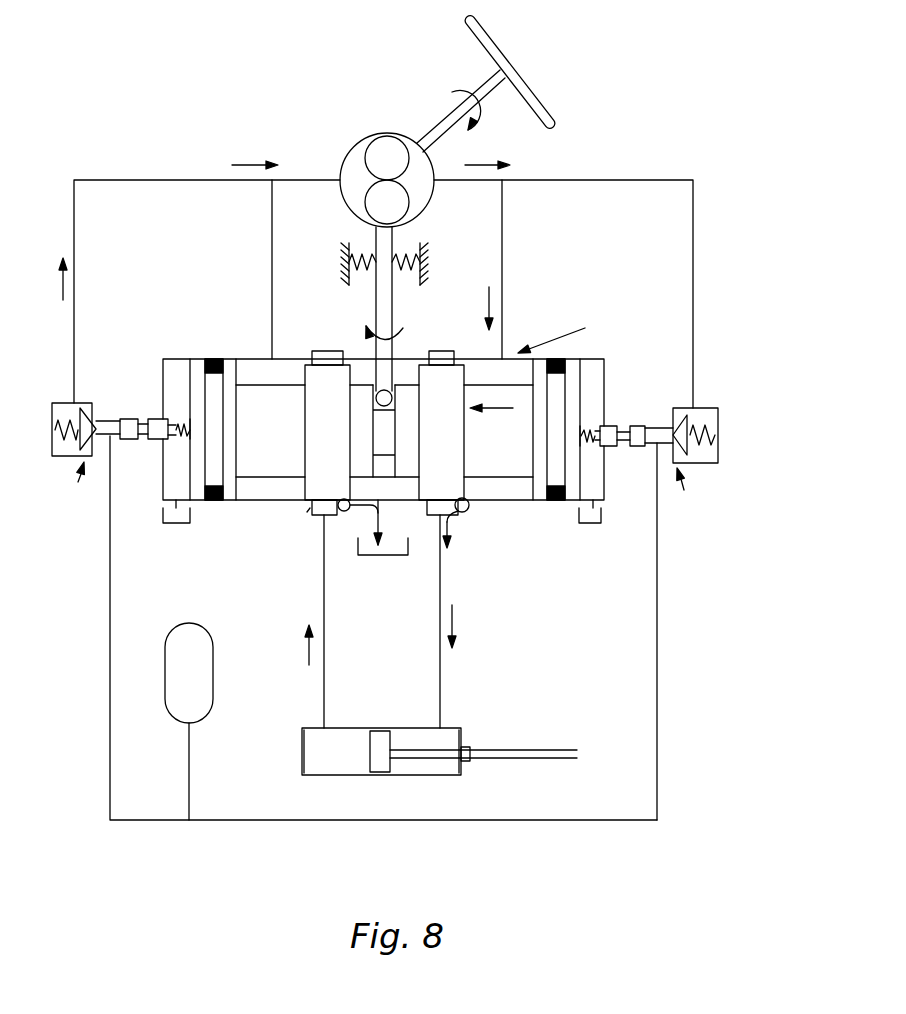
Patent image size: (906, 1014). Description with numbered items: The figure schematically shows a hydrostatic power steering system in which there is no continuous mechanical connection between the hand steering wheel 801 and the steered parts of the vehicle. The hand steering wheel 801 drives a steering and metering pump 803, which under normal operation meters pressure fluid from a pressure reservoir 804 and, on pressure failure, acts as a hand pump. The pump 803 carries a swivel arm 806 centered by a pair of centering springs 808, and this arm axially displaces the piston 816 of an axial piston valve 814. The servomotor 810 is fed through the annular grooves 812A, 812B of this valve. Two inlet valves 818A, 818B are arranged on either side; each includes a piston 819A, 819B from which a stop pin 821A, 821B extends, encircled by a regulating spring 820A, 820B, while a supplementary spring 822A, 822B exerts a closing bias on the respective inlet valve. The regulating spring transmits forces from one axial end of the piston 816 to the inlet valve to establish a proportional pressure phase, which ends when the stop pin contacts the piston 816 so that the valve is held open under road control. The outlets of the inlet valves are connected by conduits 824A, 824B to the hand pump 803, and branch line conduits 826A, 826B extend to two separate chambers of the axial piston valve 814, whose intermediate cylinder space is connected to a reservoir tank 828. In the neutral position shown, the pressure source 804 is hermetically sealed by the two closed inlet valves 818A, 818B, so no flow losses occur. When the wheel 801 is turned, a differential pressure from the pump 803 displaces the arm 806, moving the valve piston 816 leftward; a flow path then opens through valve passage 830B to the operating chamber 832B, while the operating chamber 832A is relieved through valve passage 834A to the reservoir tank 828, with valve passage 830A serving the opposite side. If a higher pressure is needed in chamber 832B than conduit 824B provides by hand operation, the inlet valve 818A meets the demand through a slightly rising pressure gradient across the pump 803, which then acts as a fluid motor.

The hand steering wheel 801 is at (540, 108).
The steering and metering pump 803 is at (362, 165).
The pressure reservoir 804 is at (185, 695).
The swivel arm 806 is at (385, 302).
The centering springs 808 is at (420, 262).
The servomotor 810 is at (372, 808).
The annular groove 812A is at (323, 513).
The annular groove 812B is at (445, 510).
The axial piston valve 814 is at (396, 415).
The piston 816 is at (500, 432).
The inlet valve 818A is at (81, 492).
The inlet valve 818B is at (700, 494).
The piston 819A is at (128, 428).
The piston 819B is at (638, 437).
The regulating spring 820A is at (185, 440).
The regulating spring 820B is at (587, 448).
The stop pin 821A is at (177, 432).
The stop pin 821B is at (592, 445).
The supplementary spring 822A is at (79, 412).
The supplementary spring 822B is at (700, 425).
The conduit 824A is at (118, 180).
The conduit 824B is at (600, 180).
The branch line conduit 826A is at (270, 275).
The branch line conduit 826B is at (502, 333).
The reservoir tank 828 is at (392, 548).
The valve passage 830A is at (307, 510).
The valve passage 830B is at (467, 511).
The operating chamber 832A is at (312, 757).
The operating chamber 832B is at (452, 757).
The valve passage 834A is at (344, 512).